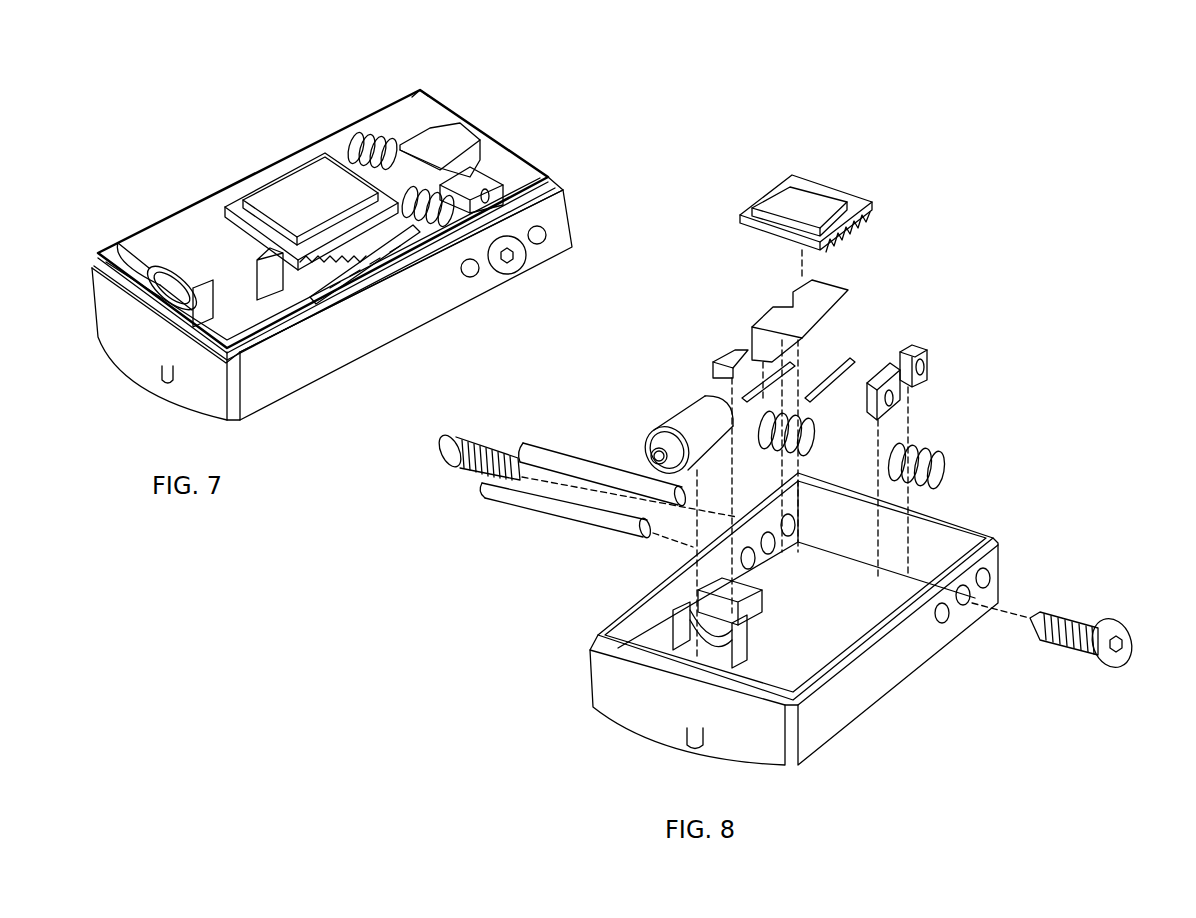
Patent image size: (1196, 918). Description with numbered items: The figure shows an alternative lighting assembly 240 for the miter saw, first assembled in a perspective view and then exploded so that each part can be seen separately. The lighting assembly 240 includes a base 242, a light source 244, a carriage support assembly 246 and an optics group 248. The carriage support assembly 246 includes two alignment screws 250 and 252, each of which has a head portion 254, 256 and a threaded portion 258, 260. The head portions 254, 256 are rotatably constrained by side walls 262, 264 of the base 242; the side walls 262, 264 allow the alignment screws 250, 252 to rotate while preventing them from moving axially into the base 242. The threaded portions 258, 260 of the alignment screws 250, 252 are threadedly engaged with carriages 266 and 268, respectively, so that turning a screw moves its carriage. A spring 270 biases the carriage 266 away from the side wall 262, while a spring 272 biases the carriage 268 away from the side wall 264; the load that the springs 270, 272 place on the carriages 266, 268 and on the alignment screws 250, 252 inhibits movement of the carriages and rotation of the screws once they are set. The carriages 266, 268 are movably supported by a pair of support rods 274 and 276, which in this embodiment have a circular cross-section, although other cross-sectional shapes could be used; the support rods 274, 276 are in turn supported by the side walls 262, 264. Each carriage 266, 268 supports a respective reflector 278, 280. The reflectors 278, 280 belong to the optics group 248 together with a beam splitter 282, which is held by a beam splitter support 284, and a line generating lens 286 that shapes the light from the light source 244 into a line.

In FIG. 7, the lighting assembly 240 is at (172, 126).
In FIG. 7, the base 242 is at (157, 347).
In FIG. 8, the base 242 is at (590, 668).
In FIG. 7, the light source 244 is at (170, 218).
In FIG. 8, the light source 244 is at (663, 410).
In FIG. 7, the carriage support assembly 246 is at (398, 106).
In FIG. 7, the optics group 248 is at (366, 283).
In FIG. 8, the alignment screw 250 is at (497, 426).
In FIG. 7, the alignment screw 252 is at (540, 252).
In FIG. 8, the alignment screw 252 is at (1128, 600).
In FIG. 8, the head portion 254 is at (422, 460).
In FIG. 8, the head portion 256 is at (1112, 668).
In FIG. 8, the threaded portion 258 is at (462, 472).
In FIG. 8, the threaded portion 260 is at (1062, 642).
In FIG. 7, the side wall 262 is at (196, 196).
In FIG. 8, the side wall 262 is at (613, 607).
In FIG. 7, the side wall 264 is at (325, 357).
In FIG. 8, the side wall 264 is at (880, 680).
In FIG. 7, the carriage 266 is at (462, 136).
In FIG. 8, the carriage 266 is at (845, 283).
In FIG. 7, the carriage 268 is at (540, 178).
In FIG. 8, the carriage 268 is at (927, 360).
In FIG. 7, the spring 270 is at (428, 207).
In FIG. 8, the spring 270 is at (808, 440).
In FIG. 7, the spring 272 is at (372, 151).
In FIG. 8, the spring 272 is at (940, 462).
In FIG. 8, the support rod 274 is at (547, 523).
In FIG. 8, the support rod 276 is at (590, 450).
In FIG. 8, the reflector 278 is at (812, 368).
In FIG. 8, the reflector 280 is at (876, 362).
In FIG. 8, the beam splitter 282 is at (712, 360).
In FIG. 8, the beam splitter support 284 is at (760, 612).
In FIG. 7, the line generating lens 286 is at (300, 185).
In FIG. 8, the line generating lens 286 is at (760, 197).